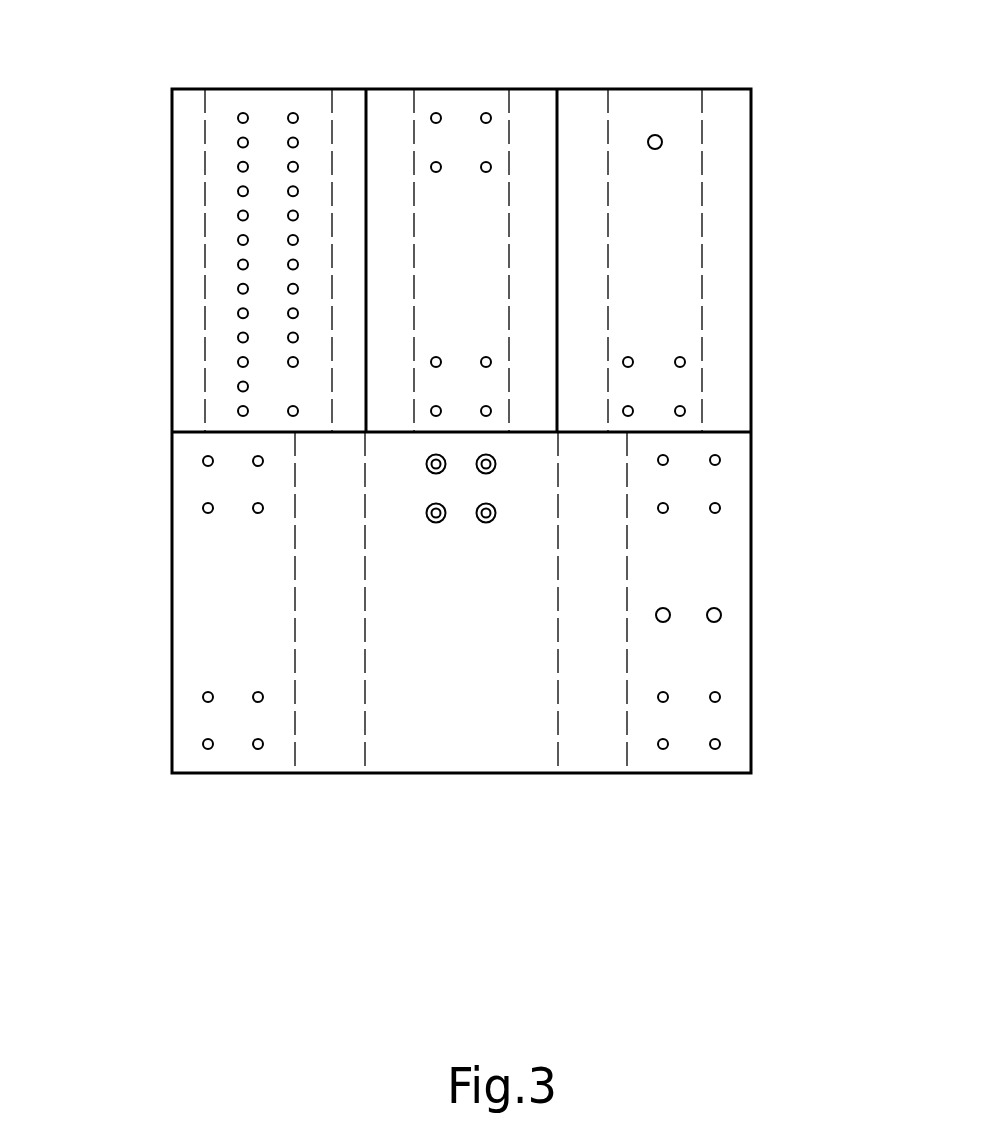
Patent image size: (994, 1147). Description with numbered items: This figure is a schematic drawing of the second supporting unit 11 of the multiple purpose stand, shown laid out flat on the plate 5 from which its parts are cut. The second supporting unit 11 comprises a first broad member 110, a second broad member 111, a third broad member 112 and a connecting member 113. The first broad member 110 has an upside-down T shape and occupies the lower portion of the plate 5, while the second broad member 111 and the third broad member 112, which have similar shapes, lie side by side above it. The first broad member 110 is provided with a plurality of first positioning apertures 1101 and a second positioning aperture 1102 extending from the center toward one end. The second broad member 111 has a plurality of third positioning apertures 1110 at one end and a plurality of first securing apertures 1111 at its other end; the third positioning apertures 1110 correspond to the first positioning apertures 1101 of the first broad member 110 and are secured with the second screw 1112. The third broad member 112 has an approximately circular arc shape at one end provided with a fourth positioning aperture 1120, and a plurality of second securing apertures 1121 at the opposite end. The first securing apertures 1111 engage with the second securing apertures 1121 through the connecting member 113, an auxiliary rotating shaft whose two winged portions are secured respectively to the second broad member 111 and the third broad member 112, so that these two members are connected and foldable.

The plate 5 is at (470, 463).
The second supporting unit 11 is at (470, 438).
The first broad member 110 is at (512, 654).
The second broad member 111 is at (198, 234).
The third broad member 112 is at (741, 221).
The connecting member 113 is at (456, 216).
The first positioning apertures 1101 is at (438, 110).
The second positioning aperture 1102 is at (724, 617).
The third positioning apertures 1110 is at (237, 388).
The first securing apertures 1111 is at (189, 234).
The second screw 1112 is at (438, 524).
The fourth positioning aperture 1120 is at (658, 132).
The second securing apertures 1121 is at (687, 361).